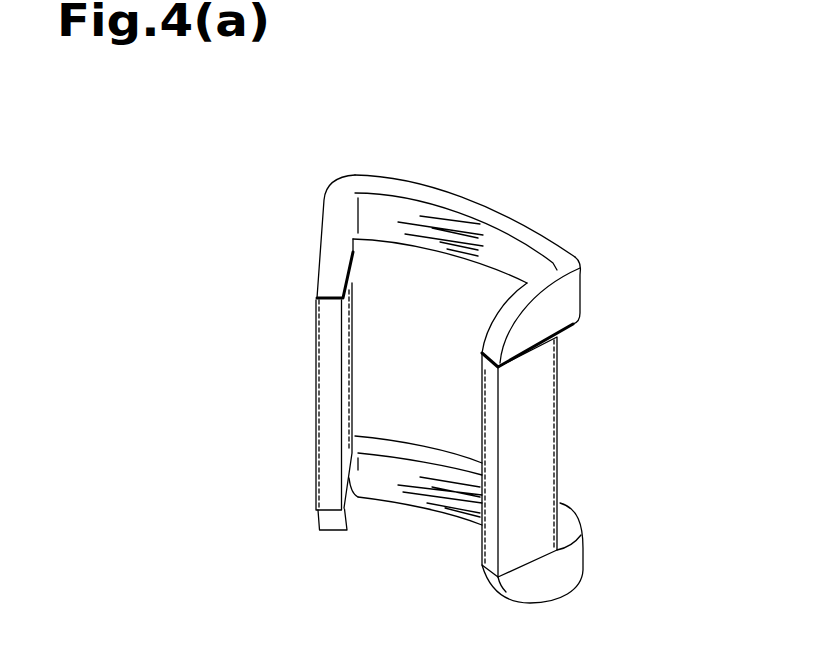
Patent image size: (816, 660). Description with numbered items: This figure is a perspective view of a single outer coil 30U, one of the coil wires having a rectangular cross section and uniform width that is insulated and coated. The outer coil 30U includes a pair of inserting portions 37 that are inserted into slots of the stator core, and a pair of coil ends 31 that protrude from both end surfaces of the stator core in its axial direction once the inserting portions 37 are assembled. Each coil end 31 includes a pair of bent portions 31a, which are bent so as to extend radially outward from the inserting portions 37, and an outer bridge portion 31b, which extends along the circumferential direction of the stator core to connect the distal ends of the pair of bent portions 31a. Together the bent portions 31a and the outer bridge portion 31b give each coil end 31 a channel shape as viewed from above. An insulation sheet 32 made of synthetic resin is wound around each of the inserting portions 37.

The outer coil 30U is at (553, 185).
The coil end 31 is at (443, 196).
The bent portion 31a is at (330, 257).
The outer bridge portion 31b is at (538, 236).
The insulation sheet 32 is at (351, 358).
The inserting portion 37 is at (316, 403).